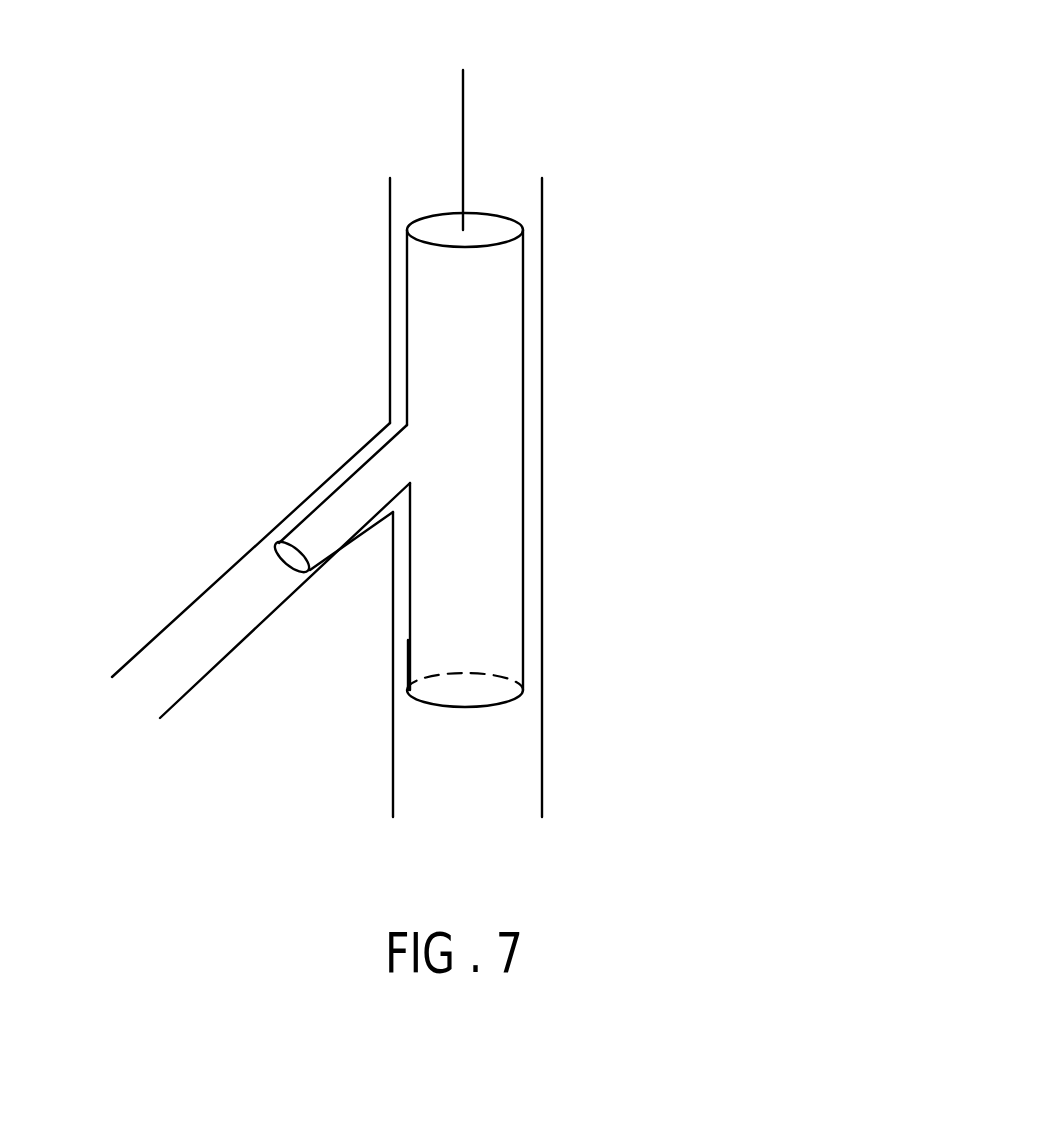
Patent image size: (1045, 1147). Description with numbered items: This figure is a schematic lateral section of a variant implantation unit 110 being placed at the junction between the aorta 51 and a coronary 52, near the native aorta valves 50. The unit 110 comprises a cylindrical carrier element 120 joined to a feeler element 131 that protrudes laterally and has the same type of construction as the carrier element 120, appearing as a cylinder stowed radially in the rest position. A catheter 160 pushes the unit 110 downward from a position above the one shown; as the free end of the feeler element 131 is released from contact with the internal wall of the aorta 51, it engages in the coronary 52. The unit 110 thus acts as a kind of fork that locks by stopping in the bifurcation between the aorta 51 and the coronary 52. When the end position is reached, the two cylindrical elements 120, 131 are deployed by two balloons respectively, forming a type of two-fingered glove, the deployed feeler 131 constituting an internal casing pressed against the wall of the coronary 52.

The implantation unit 110 is at (738, 118).
The catheter 160 is at (465, 122).
The cylindrical carrier element 120 is at (523, 408).
The feeler element 131 is at (318, 496).
The coronary 52 is at (162, 629).
The native aorta valves 50 is at (385, 660).
The aorta 51 is at (542, 775).